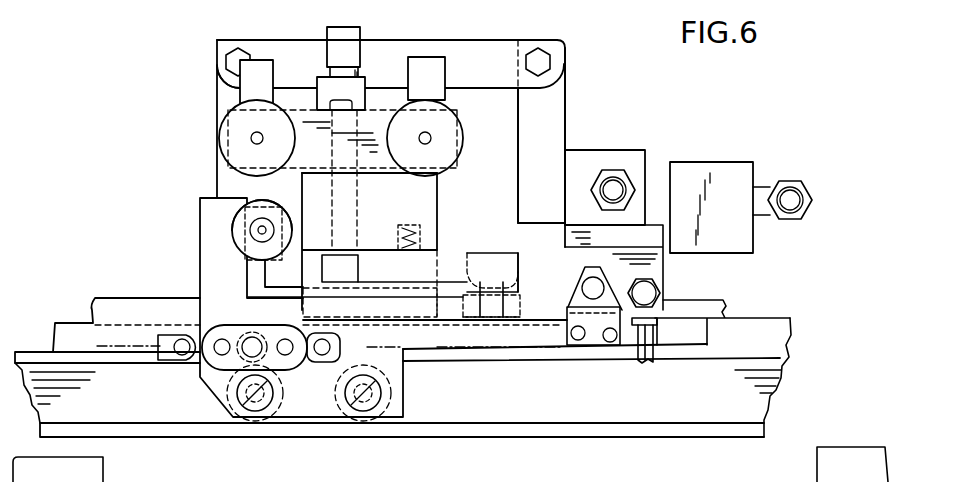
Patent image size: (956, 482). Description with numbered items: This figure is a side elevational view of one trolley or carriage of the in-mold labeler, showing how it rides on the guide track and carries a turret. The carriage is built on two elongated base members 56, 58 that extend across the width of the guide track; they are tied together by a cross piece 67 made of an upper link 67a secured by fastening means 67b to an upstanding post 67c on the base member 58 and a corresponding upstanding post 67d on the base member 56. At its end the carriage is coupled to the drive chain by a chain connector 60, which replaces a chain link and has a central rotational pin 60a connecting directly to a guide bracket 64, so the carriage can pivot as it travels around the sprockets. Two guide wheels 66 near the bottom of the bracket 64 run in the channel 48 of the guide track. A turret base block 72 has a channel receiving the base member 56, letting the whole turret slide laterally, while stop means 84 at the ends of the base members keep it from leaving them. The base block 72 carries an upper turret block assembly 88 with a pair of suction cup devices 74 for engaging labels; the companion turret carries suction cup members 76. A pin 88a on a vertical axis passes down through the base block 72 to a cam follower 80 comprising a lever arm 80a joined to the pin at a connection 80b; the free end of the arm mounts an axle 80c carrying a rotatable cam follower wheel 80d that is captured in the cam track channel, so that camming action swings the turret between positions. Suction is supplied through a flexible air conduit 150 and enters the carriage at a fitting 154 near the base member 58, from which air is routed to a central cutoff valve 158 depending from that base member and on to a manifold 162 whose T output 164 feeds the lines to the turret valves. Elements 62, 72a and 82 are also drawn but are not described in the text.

The channel 48 is at (656, 408).
The base member 56 is at (240, 240).
The base member 58 is at (585, 160).
The chain connector 60 is at (249, 360).
The central rotational pin 60a is at (245, 349).
The block 62 is at (593, 322).
The guide bracket 64 is at (200, 272).
The guide wheels 66 is at (350, 411).
The cross piece 67 is at (377, 76).
The upper link 67a is at (480, 47).
The fastening means 67b is at (232, 58).
The upstanding post 67c is at (557, 91).
The upstanding post 67d is at (220, 80).
The base block 72 is at (430, 202).
The spring 72a is at (421, 233).
The suction cup devices 74 is at (467, 137).
The suction cup members 76 is at (261, 100).
The cam follower 80 is at (493, 322).
The lever arm 80a is at (491, 278).
The connection 80b is at (302, 288).
The axle 80c is at (527, 262).
The cam follower wheel 80d is at (508, 308).
The pivot pin 82 is at (240, 217).
The stop means 84 is at (250, 210).
The upper turret block assembly 88 is at (388, 101).
The pin 88a is at (340, 100).
The flexible air conduit 150 is at (655, 362).
The fitting 154 is at (663, 281).
The central cutoff valve 158 is at (617, 262).
The manifold 162 is at (698, 172).
The T output 164 is at (800, 186).